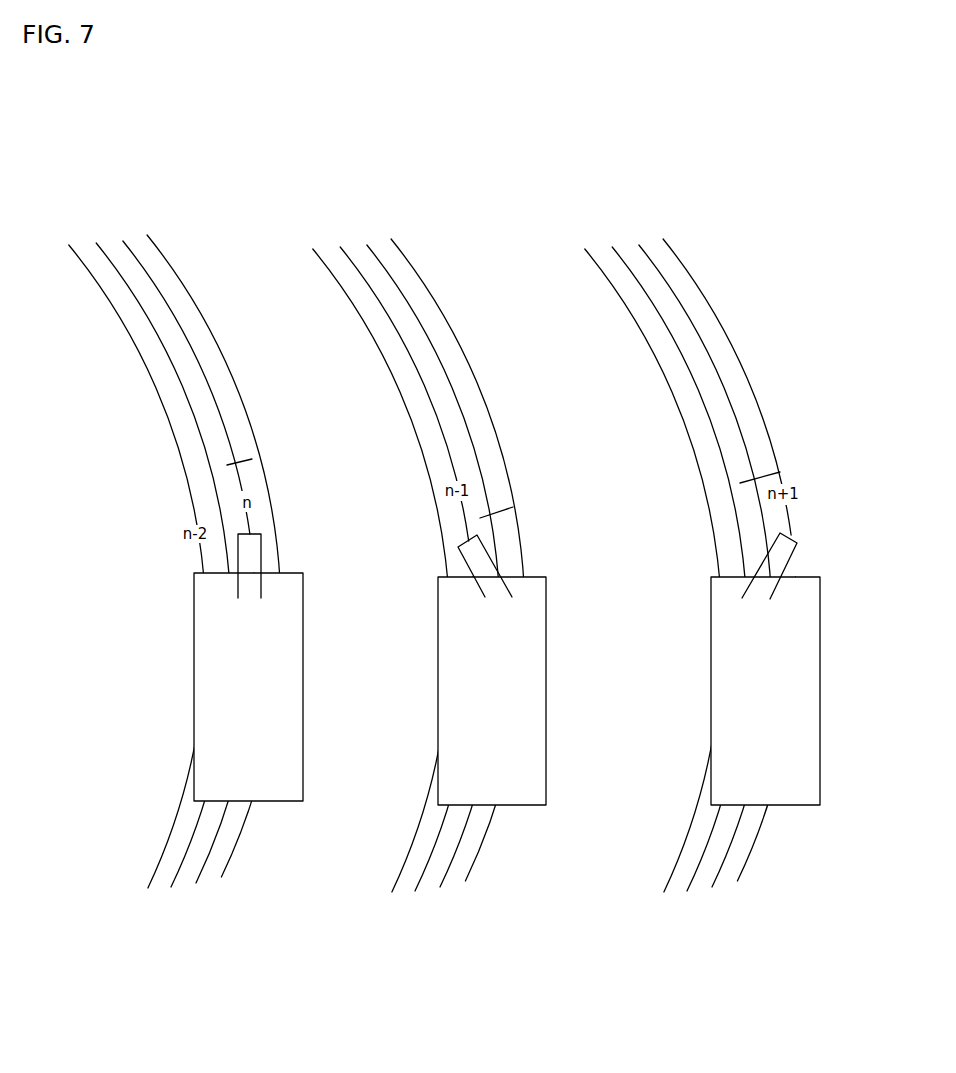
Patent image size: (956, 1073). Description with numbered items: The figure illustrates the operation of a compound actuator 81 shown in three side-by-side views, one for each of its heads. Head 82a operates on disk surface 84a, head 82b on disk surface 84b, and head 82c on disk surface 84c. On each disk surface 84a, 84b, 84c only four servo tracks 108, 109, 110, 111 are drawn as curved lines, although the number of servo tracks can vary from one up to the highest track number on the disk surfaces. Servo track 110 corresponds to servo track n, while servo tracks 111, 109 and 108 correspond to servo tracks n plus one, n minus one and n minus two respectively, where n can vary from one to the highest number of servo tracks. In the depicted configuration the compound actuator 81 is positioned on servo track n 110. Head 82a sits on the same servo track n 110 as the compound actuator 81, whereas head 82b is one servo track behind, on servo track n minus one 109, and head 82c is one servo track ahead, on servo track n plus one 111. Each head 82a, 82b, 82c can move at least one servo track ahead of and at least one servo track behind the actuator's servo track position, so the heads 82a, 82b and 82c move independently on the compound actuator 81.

The compound actuator 81 is at (303, 688).
The head 82a is at (253, 553).
The head 82b is at (493, 578).
The head 82c is at (793, 548).
The disk surface 84a is at (250, 461).
The disk surface 84b is at (500, 512).
The disk surface 84c is at (760, 476).
The servo track 108 is at (190, 485).
The servo track 109 is at (187, 398).
The servo track 110 is at (205, 373).
The servo track 111 is at (207, 325).